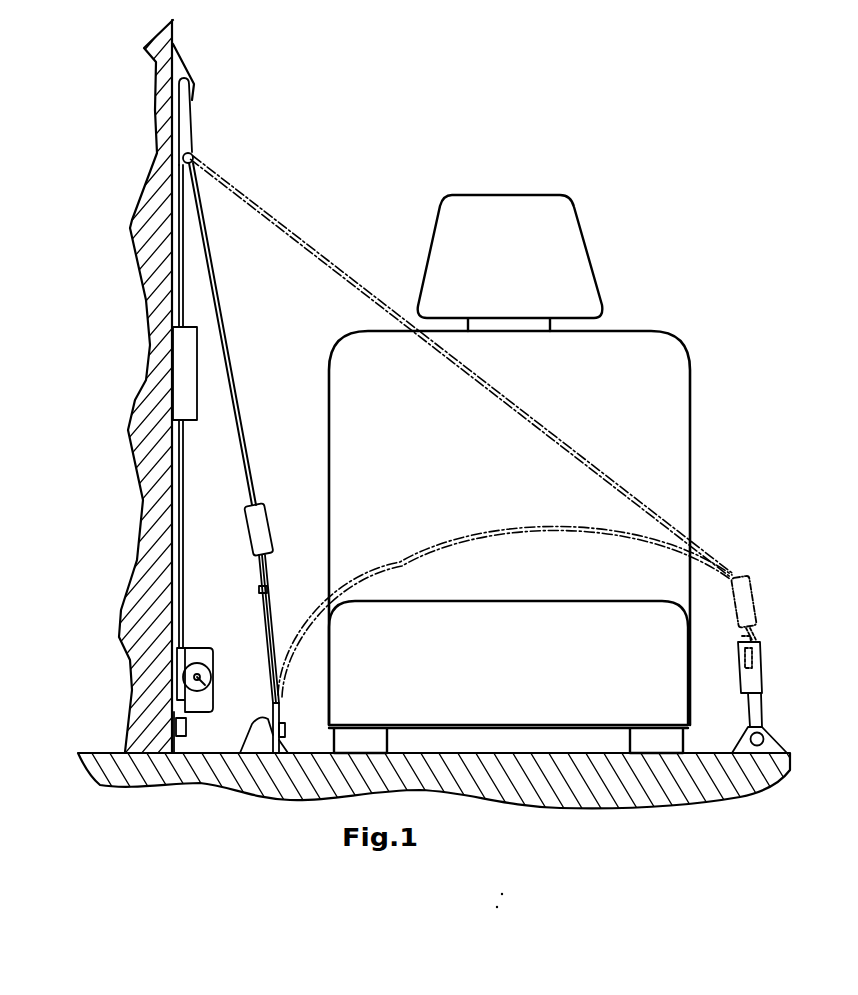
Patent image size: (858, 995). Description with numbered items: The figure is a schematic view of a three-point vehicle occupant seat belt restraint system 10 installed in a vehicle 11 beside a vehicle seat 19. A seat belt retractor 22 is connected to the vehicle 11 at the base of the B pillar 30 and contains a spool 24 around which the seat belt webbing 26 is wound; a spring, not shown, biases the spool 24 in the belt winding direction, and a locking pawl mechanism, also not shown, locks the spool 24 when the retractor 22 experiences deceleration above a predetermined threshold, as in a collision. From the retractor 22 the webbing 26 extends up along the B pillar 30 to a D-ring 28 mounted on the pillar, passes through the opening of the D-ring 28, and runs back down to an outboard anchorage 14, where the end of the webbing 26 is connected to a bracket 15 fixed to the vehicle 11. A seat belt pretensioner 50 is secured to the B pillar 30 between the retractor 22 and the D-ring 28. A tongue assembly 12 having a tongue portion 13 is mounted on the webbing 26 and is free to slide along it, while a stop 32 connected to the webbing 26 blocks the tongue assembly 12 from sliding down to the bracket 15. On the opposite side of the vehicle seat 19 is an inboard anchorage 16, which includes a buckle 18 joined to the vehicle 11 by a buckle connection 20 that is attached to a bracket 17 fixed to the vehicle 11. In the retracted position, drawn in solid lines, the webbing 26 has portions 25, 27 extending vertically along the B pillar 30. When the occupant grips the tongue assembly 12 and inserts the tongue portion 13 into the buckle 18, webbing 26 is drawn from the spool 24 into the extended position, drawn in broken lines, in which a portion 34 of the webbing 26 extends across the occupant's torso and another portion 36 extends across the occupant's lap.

The seat belt restraint system 10 is at (600, 134).
The vehicle 11 is at (612, 782).
The tongue assembly 12 is at (263, 514).
The tongue portion 13 is at (265, 590).
The outboard anchorage 14 is at (222, 738).
The bracket 15 is at (262, 742).
The inboard anchorage 16 is at (795, 673).
The bracket 17 is at (767, 747).
The buckle 18 is at (757, 668).
The vehicle seat 19 is at (684, 330).
The buckle connection 20 is at (758, 705).
The seat belt retractor 22 is at (190, 648).
The spool 24 is at (190, 688).
The portion 25 is at (183, 566).
The seat belt webbing 26 is at (218, 250).
The portion 27 is at (232, 357).
The D-ring 28 is at (192, 120).
The B pillar 30 is at (131, 193).
The stop 32 is at (264, 594).
The portion 34 is at (497, 383).
The portion 36 is at (428, 546).
The seat belt pretensioner 50 is at (148, 374).